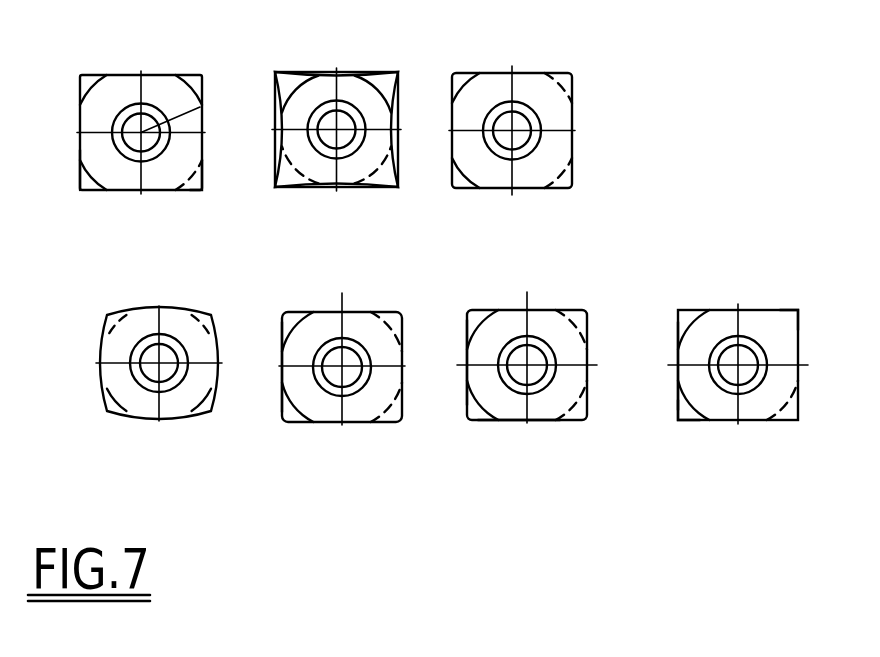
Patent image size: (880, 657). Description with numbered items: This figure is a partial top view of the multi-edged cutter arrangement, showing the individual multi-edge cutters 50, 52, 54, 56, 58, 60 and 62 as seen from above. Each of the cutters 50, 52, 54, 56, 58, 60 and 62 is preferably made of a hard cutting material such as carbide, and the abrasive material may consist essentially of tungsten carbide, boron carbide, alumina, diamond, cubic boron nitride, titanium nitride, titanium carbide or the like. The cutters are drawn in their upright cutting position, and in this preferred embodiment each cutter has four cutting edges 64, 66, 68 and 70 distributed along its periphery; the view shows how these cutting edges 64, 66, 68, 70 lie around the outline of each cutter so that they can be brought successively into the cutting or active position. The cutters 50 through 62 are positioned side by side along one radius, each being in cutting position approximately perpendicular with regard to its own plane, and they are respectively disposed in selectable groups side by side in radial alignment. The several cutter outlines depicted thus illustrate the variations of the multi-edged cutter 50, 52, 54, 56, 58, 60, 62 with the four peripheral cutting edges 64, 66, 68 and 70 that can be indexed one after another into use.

The multi-edge cutter 50 is at (138, 52).
The multi-edge cutter 52 is at (337, 52).
The multi-edge cutter 54 is at (512, 53).
The multi-edge cutter 56 is at (187, 293).
The multi-edge cutter 58 is at (395, 270).
The multi-edge cutter 60 is at (527, 277).
The cutter 62 is at (763, 288).
The cutting edge 64 is at (103, 82).
The cutting edge 66 is at (80, 180).
The cutting edge 68 is at (205, 83).
The cutting edge 70 is at (203, 174).